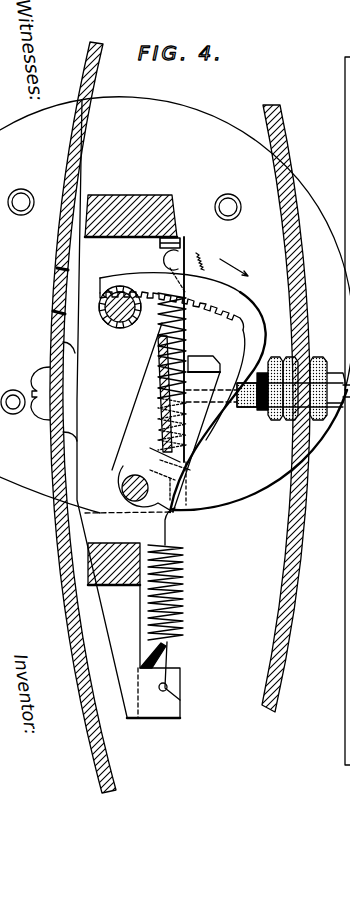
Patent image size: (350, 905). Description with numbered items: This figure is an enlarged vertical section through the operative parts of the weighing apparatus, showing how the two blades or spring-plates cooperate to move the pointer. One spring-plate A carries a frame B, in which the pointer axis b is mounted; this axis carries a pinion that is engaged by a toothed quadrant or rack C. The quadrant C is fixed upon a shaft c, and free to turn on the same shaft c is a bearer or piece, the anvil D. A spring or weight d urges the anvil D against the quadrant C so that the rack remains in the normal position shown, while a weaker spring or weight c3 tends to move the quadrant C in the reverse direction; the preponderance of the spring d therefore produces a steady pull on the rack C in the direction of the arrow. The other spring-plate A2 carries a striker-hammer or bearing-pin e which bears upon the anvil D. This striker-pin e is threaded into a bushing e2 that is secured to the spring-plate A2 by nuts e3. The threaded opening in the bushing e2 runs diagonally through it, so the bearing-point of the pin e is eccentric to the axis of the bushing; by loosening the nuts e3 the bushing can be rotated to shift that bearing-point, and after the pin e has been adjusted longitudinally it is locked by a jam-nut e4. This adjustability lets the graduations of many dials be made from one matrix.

The spring-plate A is at (72, 157).
The spring-plate A2 is at (236, 264).
The frame B is at (48, 648).
The toothed quadrant or rack C is at (232, 288).
The anvil D is at (200, 361).
The pointer axis b is at (125, 307).
The shaft c is at (184, 505).
The spring c3 is at (162, 330).
The spring d is at (176, 574).
The striker-pin e is at (268, 390).
The bushing e2 is at (262, 412).
The nuts e3 is at (297, 383).
The jam-nut e4 is at (247, 410).